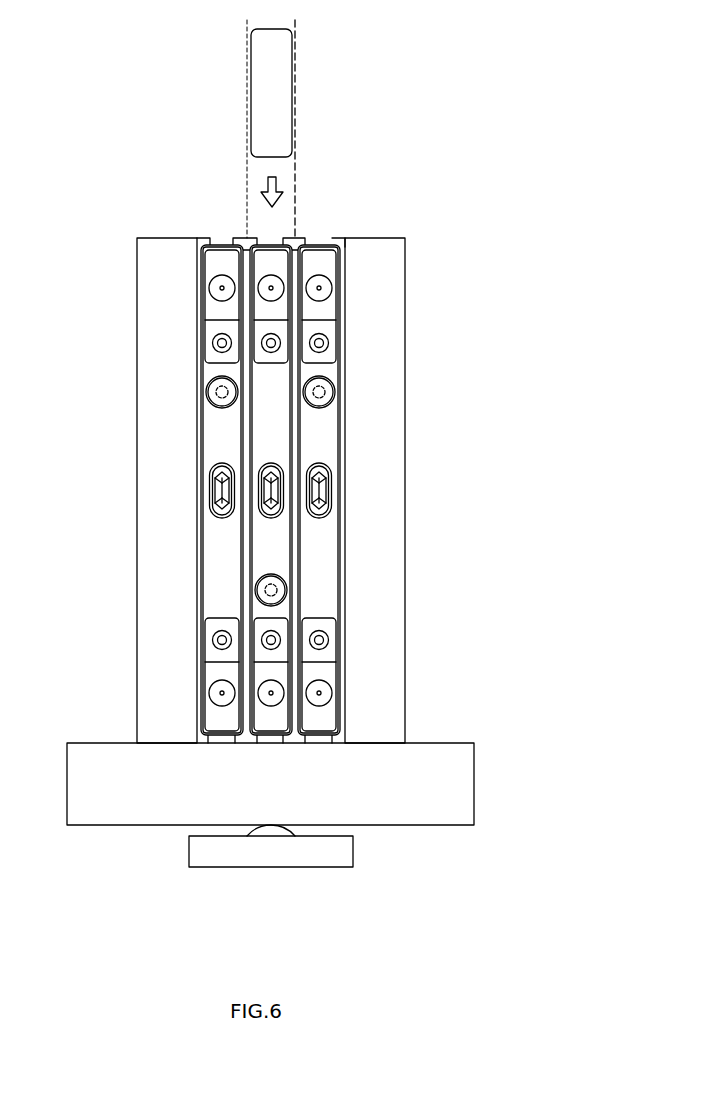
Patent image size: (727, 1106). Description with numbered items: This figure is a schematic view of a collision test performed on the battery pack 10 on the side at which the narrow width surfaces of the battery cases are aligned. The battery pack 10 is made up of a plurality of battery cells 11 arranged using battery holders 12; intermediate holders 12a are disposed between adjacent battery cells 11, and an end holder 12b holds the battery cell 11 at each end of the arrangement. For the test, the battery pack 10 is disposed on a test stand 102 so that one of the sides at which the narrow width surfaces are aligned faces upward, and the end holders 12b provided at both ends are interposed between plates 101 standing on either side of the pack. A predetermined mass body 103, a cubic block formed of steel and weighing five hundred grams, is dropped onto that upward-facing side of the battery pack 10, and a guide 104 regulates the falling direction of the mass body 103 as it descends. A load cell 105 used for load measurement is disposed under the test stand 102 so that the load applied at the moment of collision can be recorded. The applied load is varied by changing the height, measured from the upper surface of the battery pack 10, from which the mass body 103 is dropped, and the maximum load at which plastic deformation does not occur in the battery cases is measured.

The battery pack 10 is at (299, 459).
The battery cell 11 is at (272, 246).
The battery holder 12 is at (240, 177).
The intermediate holder 12a is at (242, 238).
The end holder 12b is at (208, 238).
The plate 101 is at (137, 432).
The test stand 102 is at (474, 786).
The mass body 103 is at (293, 58).
The guide 104 is at (295, 167).
The load cell 105 is at (353, 850).